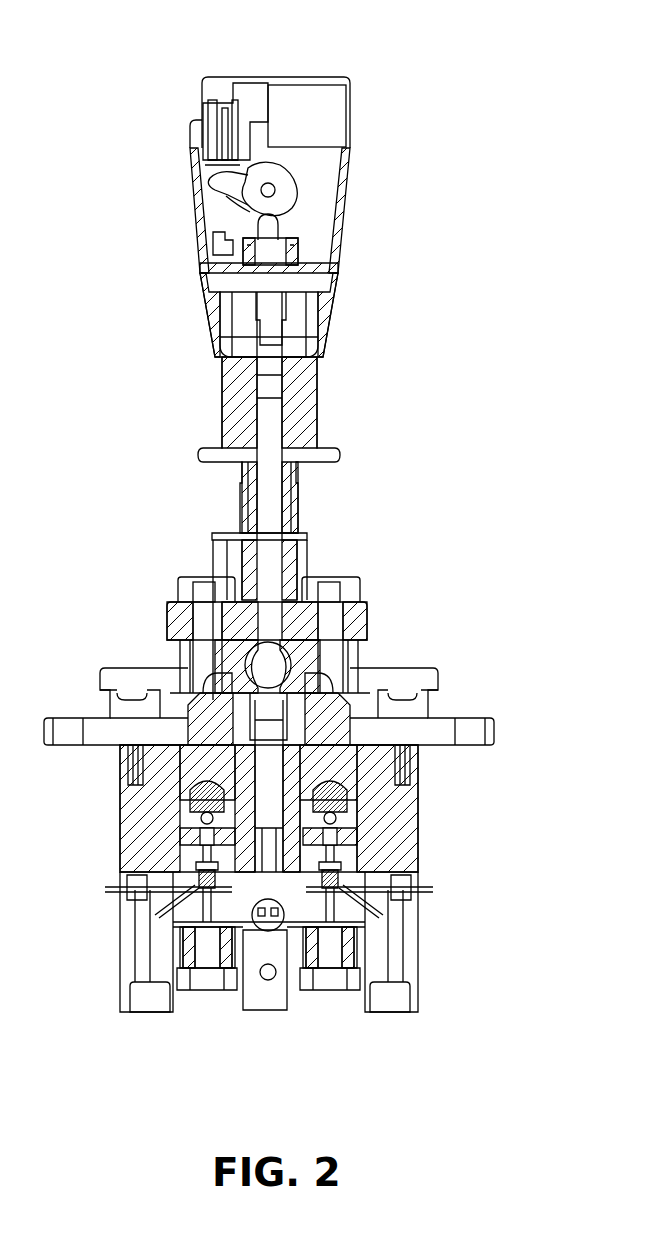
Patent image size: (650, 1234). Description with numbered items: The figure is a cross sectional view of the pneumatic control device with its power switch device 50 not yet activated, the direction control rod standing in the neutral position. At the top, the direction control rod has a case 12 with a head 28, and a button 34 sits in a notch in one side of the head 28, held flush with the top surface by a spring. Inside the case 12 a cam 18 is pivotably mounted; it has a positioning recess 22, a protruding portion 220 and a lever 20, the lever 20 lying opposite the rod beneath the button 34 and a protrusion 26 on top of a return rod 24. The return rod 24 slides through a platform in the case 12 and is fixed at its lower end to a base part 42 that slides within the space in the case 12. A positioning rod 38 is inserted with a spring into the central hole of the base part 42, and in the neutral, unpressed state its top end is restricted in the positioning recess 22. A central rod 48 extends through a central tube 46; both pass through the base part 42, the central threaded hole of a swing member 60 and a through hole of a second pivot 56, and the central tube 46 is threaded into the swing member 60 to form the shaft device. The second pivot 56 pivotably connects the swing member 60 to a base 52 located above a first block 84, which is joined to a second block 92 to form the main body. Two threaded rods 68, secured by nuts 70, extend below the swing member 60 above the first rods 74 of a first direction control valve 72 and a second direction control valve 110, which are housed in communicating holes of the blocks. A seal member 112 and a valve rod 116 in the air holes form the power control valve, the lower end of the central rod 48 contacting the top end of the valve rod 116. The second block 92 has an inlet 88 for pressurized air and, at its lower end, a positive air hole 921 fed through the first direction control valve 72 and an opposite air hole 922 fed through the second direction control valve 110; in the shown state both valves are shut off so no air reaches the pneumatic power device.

The case 12 is at (335, 300).
The cam 18 is at (295, 185).
The lever 20 is at (215, 182).
The positioning recess 22 is at (282, 232).
The return rod 24 is at (235, 312).
The protrusion 26 is at (220, 243).
The head 28 is at (345, 95).
The button 34 is at (230, 92).
The positioning rod 38 is at (278, 310).
The base part 42 is at (320, 383).
The central tube 46 is at (290, 440).
The central rod 48 is at (262, 407).
The power switch device 50 is at (205, 555).
The base 52 is at (448, 730).
The second pivot 56 is at (268, 668).
The swing member 60 is at (348, 633).
The threaded rods 68 is at (336, 617).
The nuts 70 is at (355, 578).
The first direction control valve 72 is at (364, 805).
The first rod 74 is at (200, 705).
The first block 84 is at (125, 855).
The inlet 88 is at (274, 932).
The second block 92 is at (122, 935).
The second direction control valve 110 is at (168, 824).
The seal member 112 is at (270, 852).
The valve rod 116 is at (265, 763).
The protruding portion 220 is at (225, 222).
The positive air hole 921 is at (400, 1000).
The opposite air hole 922 is at (148, 1000).